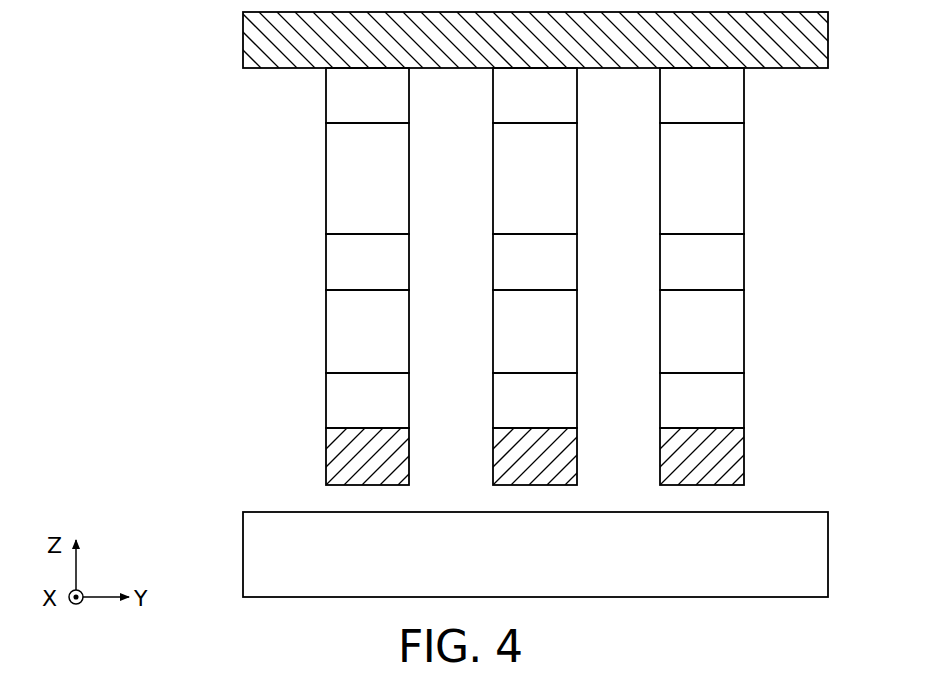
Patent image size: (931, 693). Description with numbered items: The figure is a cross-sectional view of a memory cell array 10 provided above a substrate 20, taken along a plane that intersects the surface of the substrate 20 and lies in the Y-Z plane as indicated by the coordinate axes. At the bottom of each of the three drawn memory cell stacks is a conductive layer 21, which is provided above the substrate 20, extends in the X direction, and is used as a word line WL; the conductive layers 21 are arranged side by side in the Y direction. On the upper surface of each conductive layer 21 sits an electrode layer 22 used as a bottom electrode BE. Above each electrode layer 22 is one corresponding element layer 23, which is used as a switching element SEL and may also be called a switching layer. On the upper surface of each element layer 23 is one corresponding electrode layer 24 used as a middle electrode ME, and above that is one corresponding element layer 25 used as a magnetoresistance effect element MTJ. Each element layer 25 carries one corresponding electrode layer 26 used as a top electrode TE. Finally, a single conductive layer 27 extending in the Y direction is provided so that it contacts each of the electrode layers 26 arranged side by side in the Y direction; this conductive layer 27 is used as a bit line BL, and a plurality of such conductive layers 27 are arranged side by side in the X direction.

The memory cell array 10 is at (100, 86).
The substrate 20 is at (243, 567).
The conductive layer 21 is at (326, 462).
The electrode layer 22 is at (326, 400).
The element layer 23 is at (326, 329).
The electrode layer 24 is at (326, 262).
The element layer 25 is at (326, 173).
The electrode layer 26 is at (326, 96).
The conductive layer 27 is at (243, 40).